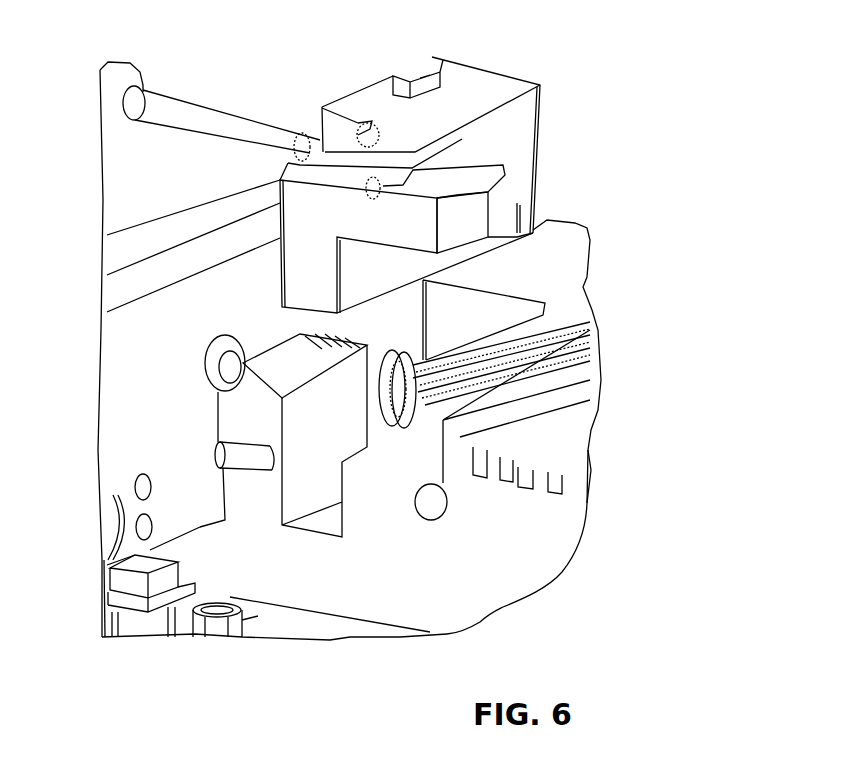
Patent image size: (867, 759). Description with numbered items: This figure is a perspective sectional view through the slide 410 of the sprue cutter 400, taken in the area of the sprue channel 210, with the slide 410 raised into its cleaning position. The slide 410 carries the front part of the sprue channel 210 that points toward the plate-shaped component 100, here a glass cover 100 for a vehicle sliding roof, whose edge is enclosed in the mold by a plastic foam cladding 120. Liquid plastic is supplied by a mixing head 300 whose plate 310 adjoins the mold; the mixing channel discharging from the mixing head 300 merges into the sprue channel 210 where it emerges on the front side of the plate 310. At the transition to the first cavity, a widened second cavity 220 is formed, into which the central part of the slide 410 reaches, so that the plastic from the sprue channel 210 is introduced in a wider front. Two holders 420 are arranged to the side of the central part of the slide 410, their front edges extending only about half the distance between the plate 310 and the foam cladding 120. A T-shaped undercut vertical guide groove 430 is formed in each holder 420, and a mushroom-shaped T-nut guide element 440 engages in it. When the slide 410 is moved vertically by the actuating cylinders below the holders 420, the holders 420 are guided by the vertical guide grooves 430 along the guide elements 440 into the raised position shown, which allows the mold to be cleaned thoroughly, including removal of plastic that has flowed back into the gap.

The plate-shaped component 100 is at (587, 502).
The foam cladding 120 is at (478, 435).
The sprue channel 210 is at (412, 390).
The second cavity 220 is at (500, 385).
The mixing head 300 is at (137, 247).
The plate 310 is at (132, 317).
The sprue cutter 400 is at (462, 215).
The slide 410 is at (460, 167).
The holders 420 is at (470, 85).
The vertical guide groove 430 is at (397, 92).
The guide element 440 is at (400, 423).